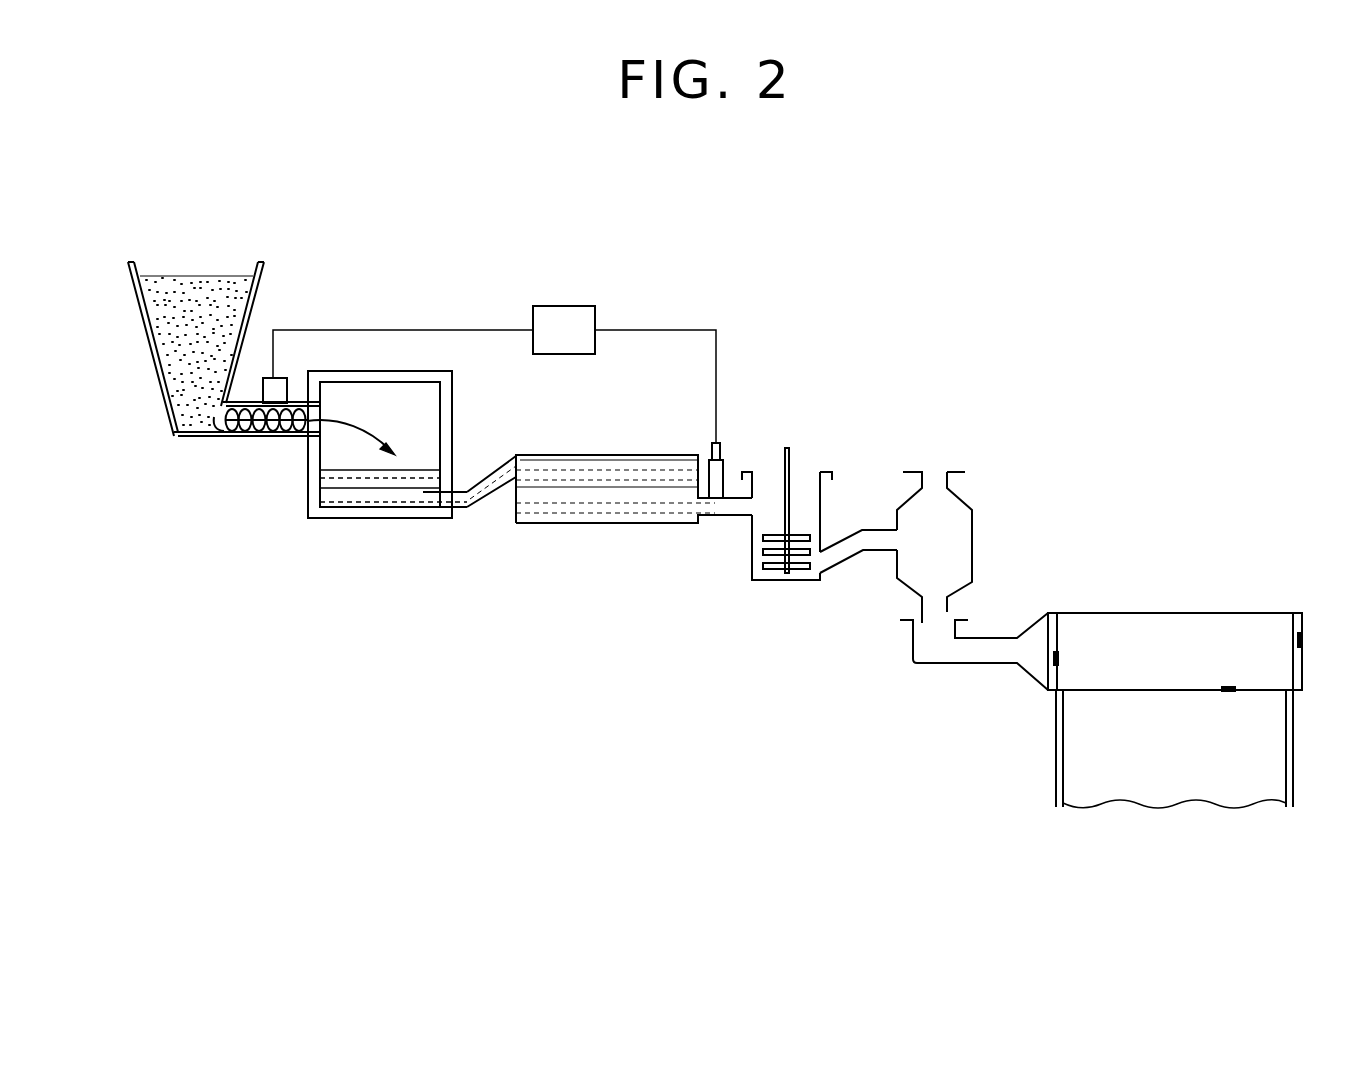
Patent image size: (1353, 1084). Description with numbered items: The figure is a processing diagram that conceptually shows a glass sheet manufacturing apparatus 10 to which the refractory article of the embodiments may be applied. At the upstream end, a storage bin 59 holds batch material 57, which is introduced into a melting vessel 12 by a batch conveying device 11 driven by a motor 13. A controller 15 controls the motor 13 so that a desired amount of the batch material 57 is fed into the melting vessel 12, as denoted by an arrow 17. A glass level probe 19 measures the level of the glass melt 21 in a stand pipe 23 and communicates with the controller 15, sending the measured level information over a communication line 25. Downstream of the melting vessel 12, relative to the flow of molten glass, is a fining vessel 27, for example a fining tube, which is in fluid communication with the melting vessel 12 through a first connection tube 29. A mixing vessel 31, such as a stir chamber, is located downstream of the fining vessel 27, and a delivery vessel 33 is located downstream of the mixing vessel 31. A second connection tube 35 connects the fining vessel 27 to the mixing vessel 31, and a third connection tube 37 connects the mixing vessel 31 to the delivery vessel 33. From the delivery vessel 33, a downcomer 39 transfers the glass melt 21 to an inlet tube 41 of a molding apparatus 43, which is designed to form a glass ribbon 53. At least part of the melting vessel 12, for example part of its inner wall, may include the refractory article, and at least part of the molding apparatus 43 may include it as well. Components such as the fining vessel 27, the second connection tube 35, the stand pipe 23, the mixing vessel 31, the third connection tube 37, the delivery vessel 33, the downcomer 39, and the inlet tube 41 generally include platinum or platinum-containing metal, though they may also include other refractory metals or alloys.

The glass sheet manufacturing apparatus 10 is at (1153, 227).
The batch conveying device 11 is at (253, 427).
The melting vessel 12 is at (308, 503).
The motor 13 is at (277, 378).
The controller 15 is at (562, 305).
The arrow 17 is at (342, 422).
The glass level probe 19 is at (712, 445).
The glass melt 21 is at (420, 470).
The stand pipe 23 is at (725, 465).
The communication line 25 is at (650, 330).
The fining vessel 27 is at (602, 454).
The first connection tube 29 is at (490, 472).
The mixing vessel 31 is at (826, 492).
The delivery vessel 33 is at (973, 517).
The second connection tube 35 is at (732, 517).
The third connection tube 37 is at (852, 558).
The downcomer 39 is at (950, 612).
The inlet tube 41 is at (912, 642).
The molding apparatus 43 is at (1218, 612).
The glass ribbon 53 is at (1080, 778).
The batch material 57 is at (190, 275).
The storage bin 59 is at (150, 352).